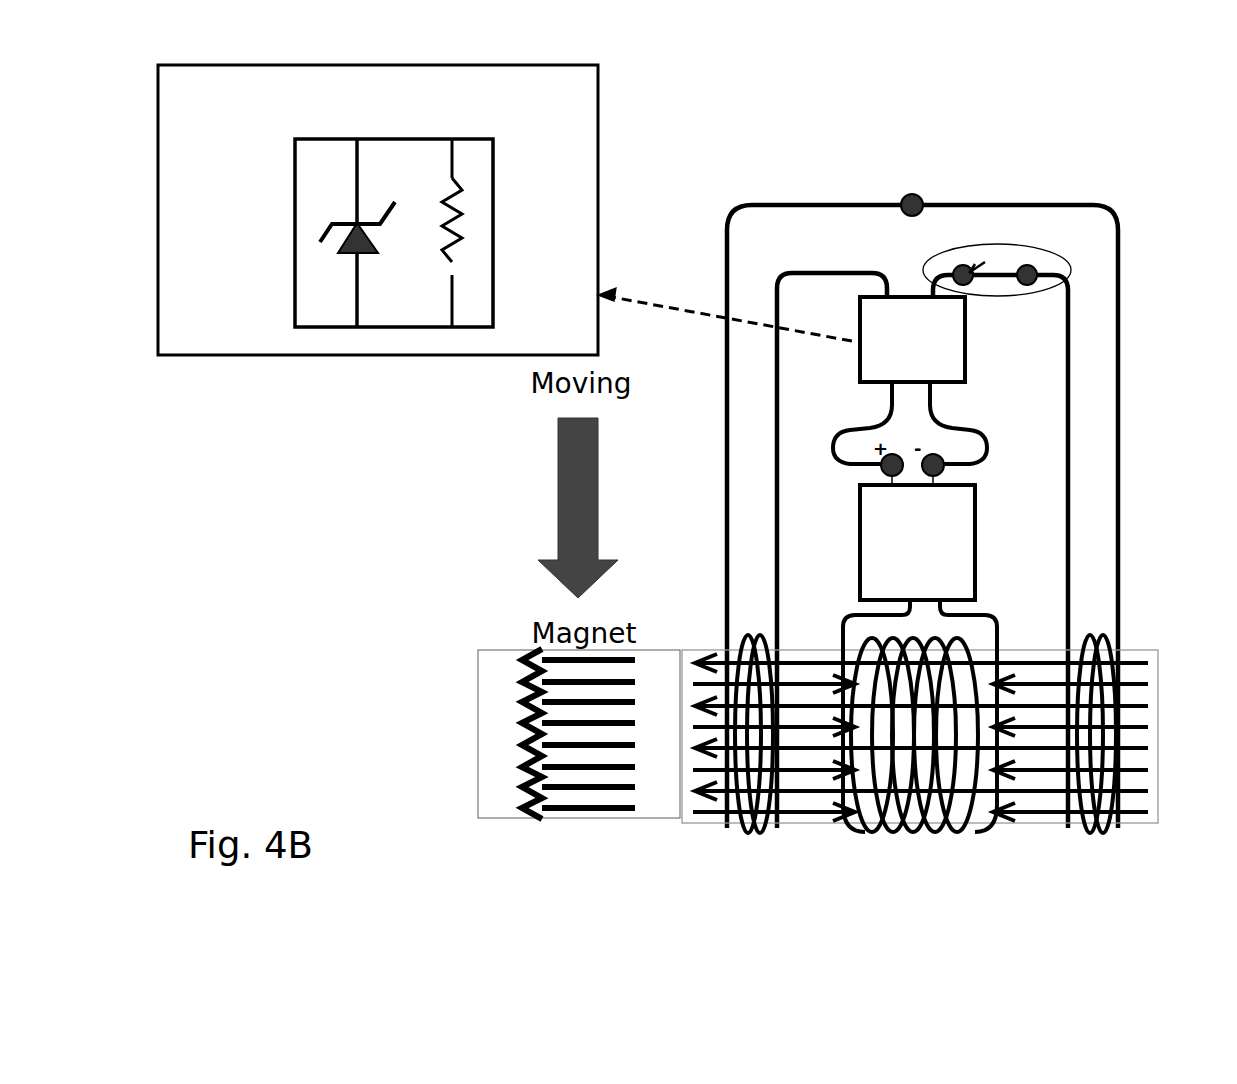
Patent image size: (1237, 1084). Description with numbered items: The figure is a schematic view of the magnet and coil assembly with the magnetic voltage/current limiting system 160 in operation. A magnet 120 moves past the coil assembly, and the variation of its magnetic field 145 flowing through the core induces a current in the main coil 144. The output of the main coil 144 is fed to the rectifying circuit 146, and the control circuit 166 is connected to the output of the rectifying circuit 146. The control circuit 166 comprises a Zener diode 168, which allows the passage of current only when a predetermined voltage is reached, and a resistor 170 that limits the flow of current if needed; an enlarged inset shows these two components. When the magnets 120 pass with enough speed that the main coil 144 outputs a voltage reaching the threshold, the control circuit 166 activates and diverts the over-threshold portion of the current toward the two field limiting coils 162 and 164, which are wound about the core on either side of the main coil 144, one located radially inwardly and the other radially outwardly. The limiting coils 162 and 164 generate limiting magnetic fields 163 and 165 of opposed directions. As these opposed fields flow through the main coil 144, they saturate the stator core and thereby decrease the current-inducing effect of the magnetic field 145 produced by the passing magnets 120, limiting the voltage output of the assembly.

The magnet 120 is at (483, 780).
The main coil 144 is at (895, 833).
The magnetic field 145 is at (1143, 787).
The rectifying circuit 146 is at (963, 578).
The magnetic voltage/current limiting system 160 is at (1149, 203).
The field limiting coil 162 is at (743, 830).
The limiting magnetic field 163 is at (805, 770).
The field limiting coil 164 is at (1110, 833).
The limiting magnetic field 165 is at (1050, 772).
The control circuit 166 is at (597, 225).
The Zener diode 168 is at (337, 252).
The resistor 170 is at (458, 264).